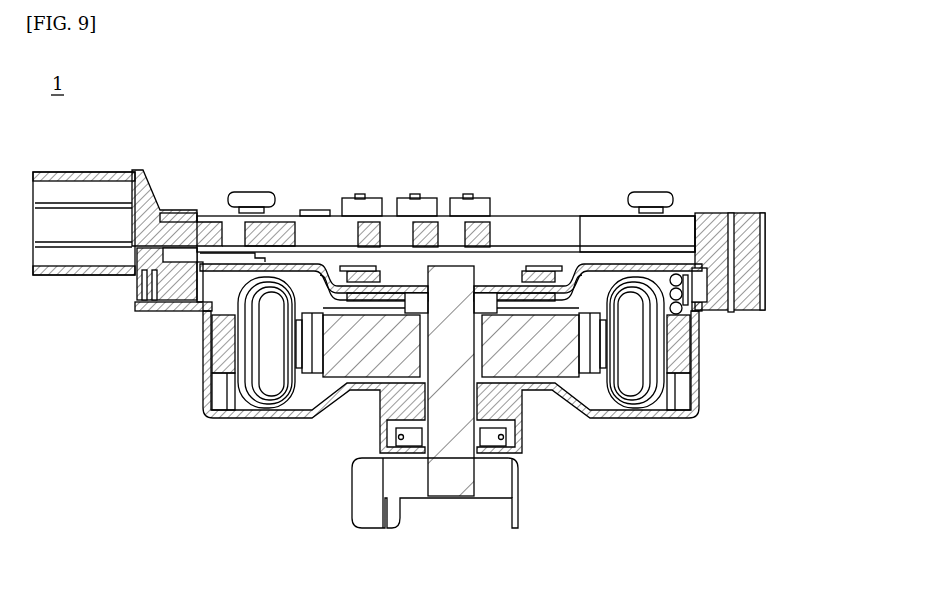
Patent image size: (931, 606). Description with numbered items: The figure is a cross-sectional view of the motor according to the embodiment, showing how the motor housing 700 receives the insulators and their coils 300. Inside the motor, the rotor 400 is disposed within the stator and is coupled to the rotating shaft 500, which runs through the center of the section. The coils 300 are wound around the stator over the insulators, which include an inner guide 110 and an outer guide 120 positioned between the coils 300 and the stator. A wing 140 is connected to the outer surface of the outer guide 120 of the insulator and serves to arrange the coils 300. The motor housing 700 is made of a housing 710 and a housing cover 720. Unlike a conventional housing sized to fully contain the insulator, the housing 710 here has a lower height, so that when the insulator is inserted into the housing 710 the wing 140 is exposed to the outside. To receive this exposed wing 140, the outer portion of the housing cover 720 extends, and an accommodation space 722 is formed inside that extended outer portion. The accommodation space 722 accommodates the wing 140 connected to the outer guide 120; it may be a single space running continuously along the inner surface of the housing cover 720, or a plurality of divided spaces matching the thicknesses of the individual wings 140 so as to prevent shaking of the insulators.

The inner guide 110 is at (603, 300).
The outer guide 120 is at (674, 287).
The wing 140 is at (699, 280).
The coil 300 is at (630, 413).
The rotor 400 is at (528, 348).
The rotating shaft 500 is at (450, 472).
The motor housing 700 is at (538, 333).
The housing 710 is at (510, 378).
The housing cover 720 is at (747, 247).
The accommodation space 722 is at (733, 282).